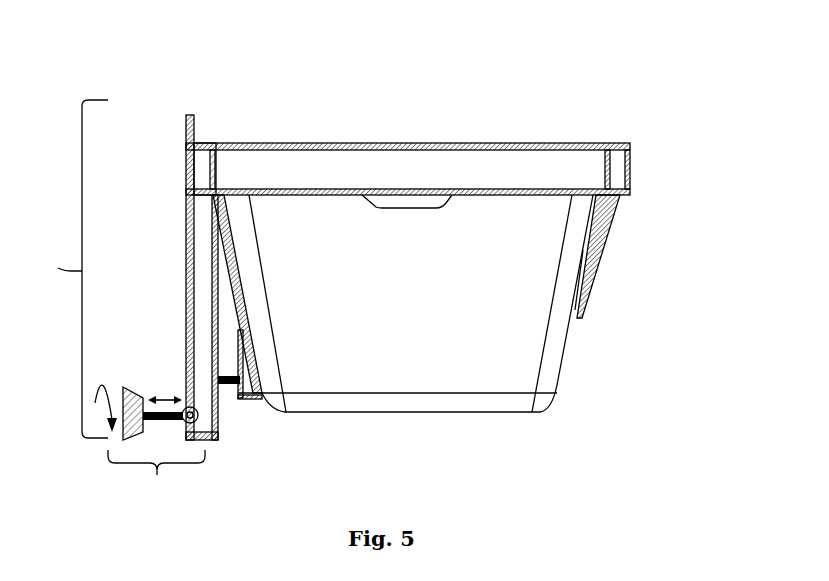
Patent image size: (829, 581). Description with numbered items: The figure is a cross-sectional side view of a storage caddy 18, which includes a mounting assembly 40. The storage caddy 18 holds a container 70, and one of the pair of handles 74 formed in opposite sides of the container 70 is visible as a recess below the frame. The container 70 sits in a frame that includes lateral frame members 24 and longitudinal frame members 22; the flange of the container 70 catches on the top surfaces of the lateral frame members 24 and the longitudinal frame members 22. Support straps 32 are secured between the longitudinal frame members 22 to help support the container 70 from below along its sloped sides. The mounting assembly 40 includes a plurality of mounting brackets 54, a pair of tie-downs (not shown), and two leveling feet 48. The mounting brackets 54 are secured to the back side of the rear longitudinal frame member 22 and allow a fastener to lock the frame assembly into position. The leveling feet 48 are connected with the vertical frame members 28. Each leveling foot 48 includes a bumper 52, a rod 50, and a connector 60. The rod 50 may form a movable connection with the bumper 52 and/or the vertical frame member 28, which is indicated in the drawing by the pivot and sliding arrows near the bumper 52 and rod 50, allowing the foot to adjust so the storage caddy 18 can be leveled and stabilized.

The storage caddy 18 is at (590, 318).
The longitudinal frame member 22 is at (205, 180).
The lateral frame member 24 is at (432, 170).
The vertical frame member 28 is at (205, 298).
The support strap 32 is at (600, 217).
The mounting assembly 40 is at (68, 269).
The leveling foot 48 is at (156, 479).
The rod 50 is at (230, 380).
The bumper 52 is at (125, 430).
The mounting bracket 54 is at (188, 118).
The connector 60 is at (180, 418).
The container 70 is at (476, 217).
The handle 74 is at (405, 192).